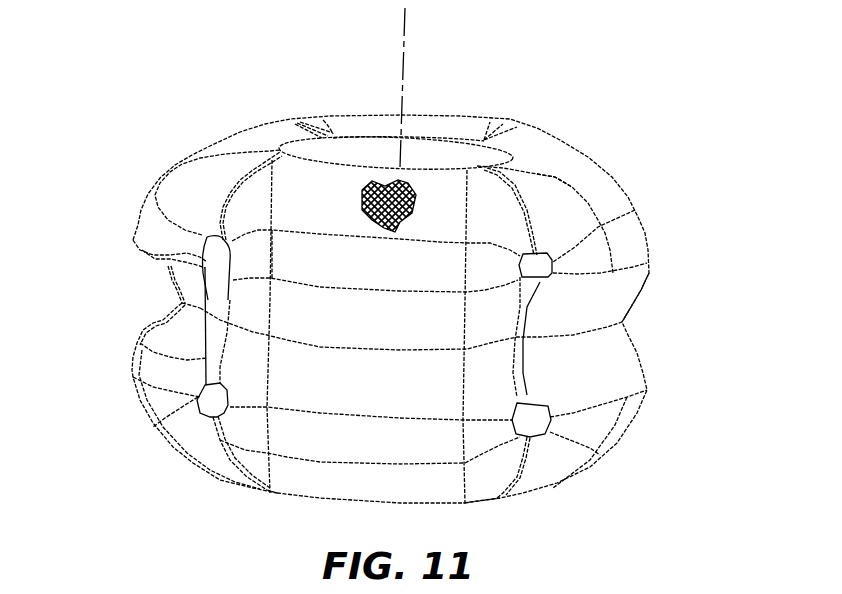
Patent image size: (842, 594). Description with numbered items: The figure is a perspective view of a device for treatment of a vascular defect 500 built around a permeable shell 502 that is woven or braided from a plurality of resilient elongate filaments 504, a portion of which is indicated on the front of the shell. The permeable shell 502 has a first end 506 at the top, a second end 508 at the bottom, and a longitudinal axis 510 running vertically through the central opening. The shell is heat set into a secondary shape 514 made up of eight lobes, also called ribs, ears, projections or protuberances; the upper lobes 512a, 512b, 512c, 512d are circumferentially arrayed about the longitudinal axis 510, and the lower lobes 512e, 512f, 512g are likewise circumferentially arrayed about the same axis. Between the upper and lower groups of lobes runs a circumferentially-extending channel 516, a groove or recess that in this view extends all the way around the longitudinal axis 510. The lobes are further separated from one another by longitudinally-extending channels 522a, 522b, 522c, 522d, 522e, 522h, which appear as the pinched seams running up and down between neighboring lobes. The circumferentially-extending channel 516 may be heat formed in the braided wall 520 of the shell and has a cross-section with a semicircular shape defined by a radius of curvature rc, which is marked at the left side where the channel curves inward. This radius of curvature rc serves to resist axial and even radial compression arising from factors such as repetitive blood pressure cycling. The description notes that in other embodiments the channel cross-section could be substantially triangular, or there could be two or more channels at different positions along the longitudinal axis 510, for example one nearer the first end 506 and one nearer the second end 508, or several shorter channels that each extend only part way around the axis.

The device for treatment of a vascular defect 500 is at (150, 60).
The permeable shell 502 is at (645, 217).
The resilient elongate filaments 504 is at (416, 186).
The first end 506 is at (432, 123).
The second end 508 is at (507, 498).
The longitudinal axis 510 is at (407, 48).
The lobe 512a is at (270, 207).
The lobe 512b is at (193, 148).
The lobe 512c is at (381, 116).
The lobe 512d is at (575, 158).
The lobe 512e is at (320, 437).
The lobe 512f is at (138, 398).
The lobe 512g is at (645, 380).
The secondary shape 514 is at (97, 291).
The circumferentially-extending channel 516 is at (622, 322).
The braided wall 520 is at (433, 497).
The longitudinally-extending channel 522a is at (217, 236).
The longitudinally-extending channel 522b is at (293, 124).
The longitudinally-extending channel 522c is at (523, 133).
The longitudinally-extending channel 522d is at (533, 290).
The longitudinally-extending channel 522e is at (213, 428).
The longitudinally-extending channel 522h is at (523, 392).
The radius of curvature rc is at (182, 302).